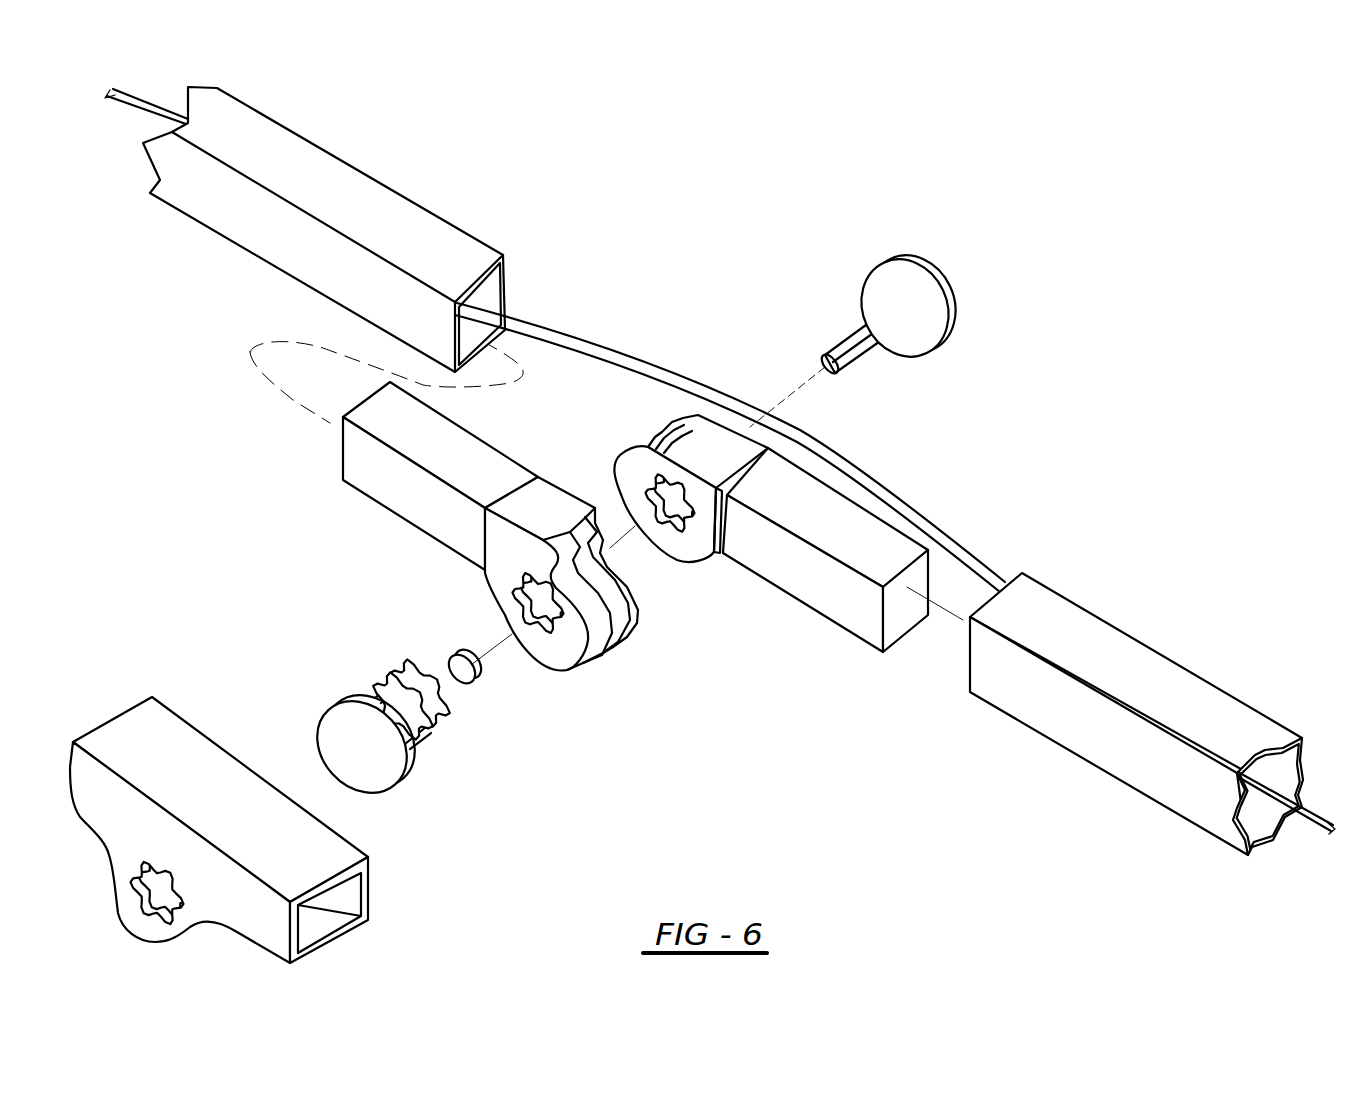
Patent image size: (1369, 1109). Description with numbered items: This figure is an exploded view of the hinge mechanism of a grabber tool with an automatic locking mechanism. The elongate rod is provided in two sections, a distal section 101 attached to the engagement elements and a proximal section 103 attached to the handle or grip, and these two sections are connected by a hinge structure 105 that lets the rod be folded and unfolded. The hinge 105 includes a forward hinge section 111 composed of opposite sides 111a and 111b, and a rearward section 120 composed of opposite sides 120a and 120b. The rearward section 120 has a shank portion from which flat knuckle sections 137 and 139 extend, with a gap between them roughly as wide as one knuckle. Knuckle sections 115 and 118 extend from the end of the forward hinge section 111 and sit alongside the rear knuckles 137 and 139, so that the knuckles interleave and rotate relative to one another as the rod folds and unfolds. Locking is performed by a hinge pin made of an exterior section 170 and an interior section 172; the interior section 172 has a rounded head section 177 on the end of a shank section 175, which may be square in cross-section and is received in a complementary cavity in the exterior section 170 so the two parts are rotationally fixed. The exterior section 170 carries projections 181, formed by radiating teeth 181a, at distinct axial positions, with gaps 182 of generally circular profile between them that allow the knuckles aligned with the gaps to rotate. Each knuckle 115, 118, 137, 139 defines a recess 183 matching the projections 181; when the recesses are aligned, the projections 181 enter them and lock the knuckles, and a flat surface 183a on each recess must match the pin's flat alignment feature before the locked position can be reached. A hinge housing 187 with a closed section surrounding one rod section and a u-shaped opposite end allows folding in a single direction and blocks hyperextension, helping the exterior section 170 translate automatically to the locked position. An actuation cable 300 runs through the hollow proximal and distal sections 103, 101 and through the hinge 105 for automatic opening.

The distal section 101 is at (363, 198).
The proximal section 103 is at (1157, 670).
The hinge structure 105 is at (753, 604).
The forward hinge section 111 is at (373, 485).
The side of forward hinge section 111a is at (417, 500).
The side of forward hinge section 111b is at (493, 453).
The knuckle section 115 is at (630, 623).
The knuckle section 118 is at (614, 608).
The rearward section 120 is at (798, 588).
The side of rearward section 120a is at (883, 527).
The side of rearward section 120b is at (702, 548).
The knuckle section 137 is at (678, 420).
The knuckle section 139 is at (640, 448).
The exterior section 170 is at (378, 752).
The interior section 172 is at (901, 294).
The shank section 175 is at (853, 340).
The rounded head section 177 is at (907, 267).
The projections 181 is at (423, 657).
The teeth 181a is at (443, 735).
The gaps 182 is at (418, 657).
The recess 183 is at (542, 638).
The flat surface 183a is at (694, 580).
The hinge housing 187 is at (147, 722).
The actuation cable 300 is at (593, 340).